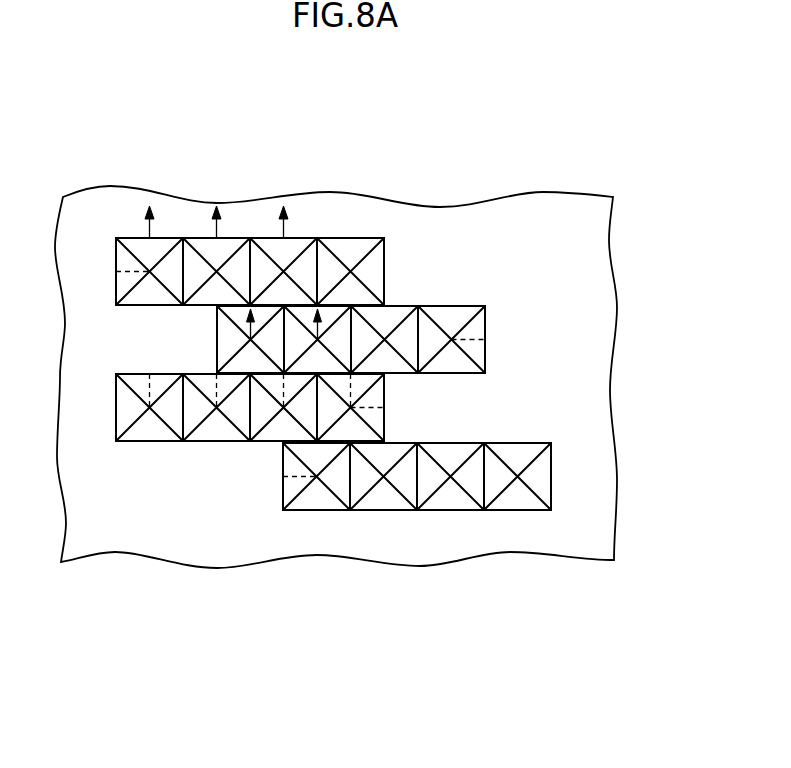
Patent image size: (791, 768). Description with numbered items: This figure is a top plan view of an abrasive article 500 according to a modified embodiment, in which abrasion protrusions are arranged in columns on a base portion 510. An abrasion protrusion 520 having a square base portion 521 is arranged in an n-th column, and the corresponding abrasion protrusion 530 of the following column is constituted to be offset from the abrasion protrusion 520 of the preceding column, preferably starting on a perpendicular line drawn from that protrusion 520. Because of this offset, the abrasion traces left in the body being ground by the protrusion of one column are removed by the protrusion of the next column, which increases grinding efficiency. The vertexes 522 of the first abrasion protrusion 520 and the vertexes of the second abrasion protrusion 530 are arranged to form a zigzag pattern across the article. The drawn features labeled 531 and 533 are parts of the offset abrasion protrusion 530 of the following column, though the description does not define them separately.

The abrasive article 500 is at (361, 622).
The base portion 510 is at (580, 370).
The abrasion protrusion 520 is at (359, 248).
The square base portion 521 is at (142, 306).
The vertex 522 is at (292, 248).
The abrasion protrusion 530 is at (483, 333).
The third pixel 531 is at (447, 374).
The fourth pixel 533 is at (386, 338).